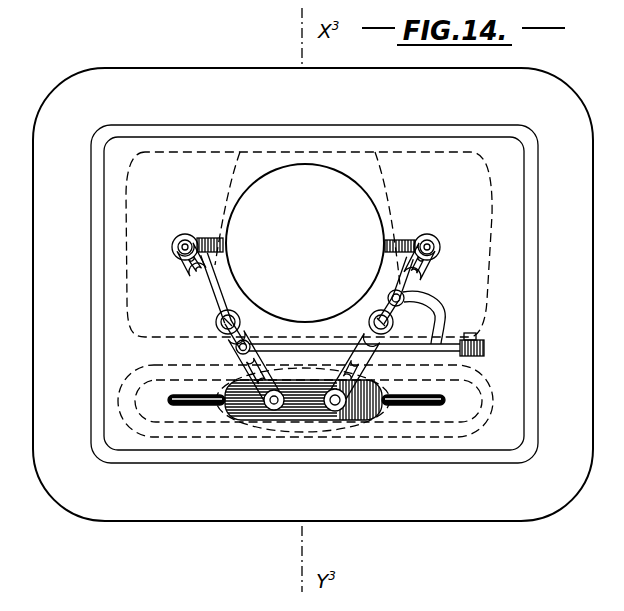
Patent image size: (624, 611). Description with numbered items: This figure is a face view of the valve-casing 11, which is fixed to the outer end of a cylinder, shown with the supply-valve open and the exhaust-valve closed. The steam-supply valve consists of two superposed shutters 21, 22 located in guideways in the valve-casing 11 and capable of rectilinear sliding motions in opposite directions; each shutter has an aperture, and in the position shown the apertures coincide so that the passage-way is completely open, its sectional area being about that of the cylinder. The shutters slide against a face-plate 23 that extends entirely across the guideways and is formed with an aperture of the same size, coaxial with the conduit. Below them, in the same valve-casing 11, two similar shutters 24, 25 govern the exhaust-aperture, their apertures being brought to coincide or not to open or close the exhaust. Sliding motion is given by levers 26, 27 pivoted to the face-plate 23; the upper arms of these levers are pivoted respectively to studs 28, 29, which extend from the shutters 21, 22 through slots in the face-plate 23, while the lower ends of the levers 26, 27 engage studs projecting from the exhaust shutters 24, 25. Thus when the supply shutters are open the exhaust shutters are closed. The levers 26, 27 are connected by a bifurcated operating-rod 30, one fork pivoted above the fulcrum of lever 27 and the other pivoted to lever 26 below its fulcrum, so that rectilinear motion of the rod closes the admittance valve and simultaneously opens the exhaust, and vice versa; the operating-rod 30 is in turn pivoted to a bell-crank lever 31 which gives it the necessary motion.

The valve-casing 11 is at (313, 294).
The shutter 21 is at (224, 246).
The shutter 22 is at (386, 251).
The face-plate 23 is at (316, 291).
The shutter 24 is at (368, 412).
The shutter 25 is at (305, 405).
The lever 26 is at (212, 287).
The lever 27 is at (420, 280).
The stud 28 is at (202, 233).
The stud 29 is at (433, 240).
The operating-rod 30 is at (321, 344).
The bell-crank lever 31 is at (484, 353).